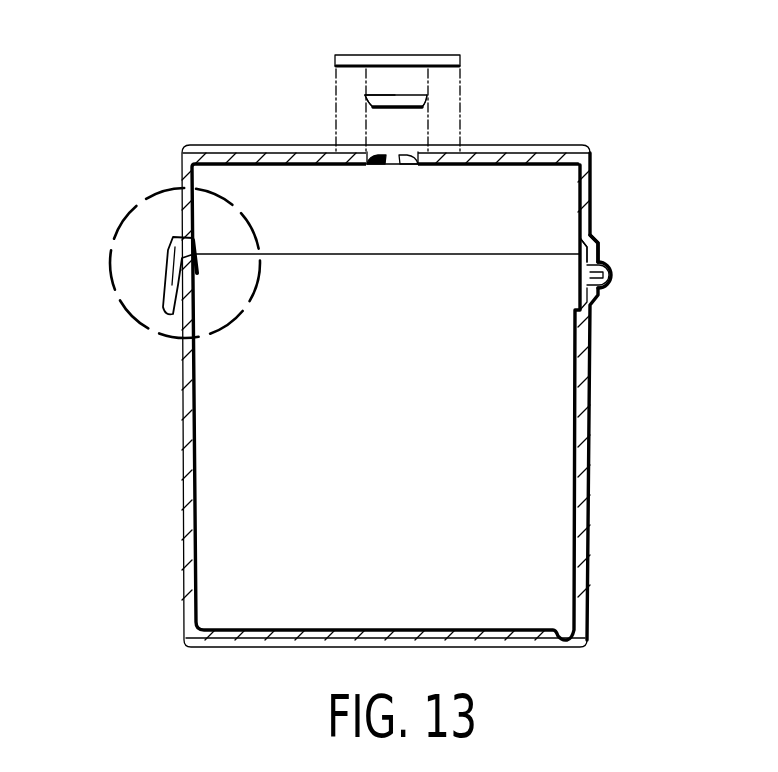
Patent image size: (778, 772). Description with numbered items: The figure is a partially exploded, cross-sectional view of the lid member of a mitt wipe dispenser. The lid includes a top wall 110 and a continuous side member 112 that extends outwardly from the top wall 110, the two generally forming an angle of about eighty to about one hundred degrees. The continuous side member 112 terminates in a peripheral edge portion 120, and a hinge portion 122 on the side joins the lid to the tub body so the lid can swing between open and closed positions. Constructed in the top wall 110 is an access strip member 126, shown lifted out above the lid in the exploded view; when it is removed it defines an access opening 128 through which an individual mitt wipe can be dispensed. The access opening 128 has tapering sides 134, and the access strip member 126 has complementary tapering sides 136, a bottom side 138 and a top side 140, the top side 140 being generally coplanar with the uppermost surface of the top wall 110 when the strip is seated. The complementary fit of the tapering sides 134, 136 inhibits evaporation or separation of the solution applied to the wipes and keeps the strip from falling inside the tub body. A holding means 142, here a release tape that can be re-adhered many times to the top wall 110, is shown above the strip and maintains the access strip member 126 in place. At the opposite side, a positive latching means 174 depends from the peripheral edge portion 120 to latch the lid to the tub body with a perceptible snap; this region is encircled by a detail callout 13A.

The top wall 110 is at (240, 152).
The continuous side member 112 is at (593, 186).
The peripheral edge portion 120 is at (599, 240).
The hinge portion 122 is at (613, 275).
The access strip member 126 is at (415, 95).
The access opening 128 is at (394, 167).
The tapering sides 134 is at (379, 168).
The tapering sides 136 is at (373, 103).
The bottom side 138 is at (407, 108).
The top side 140 is at (381, 95).
The holding means 142 is at (421, 53).
The positive latching means 174 is at (118, 212).
The detail circle 13A is at (111, 268).